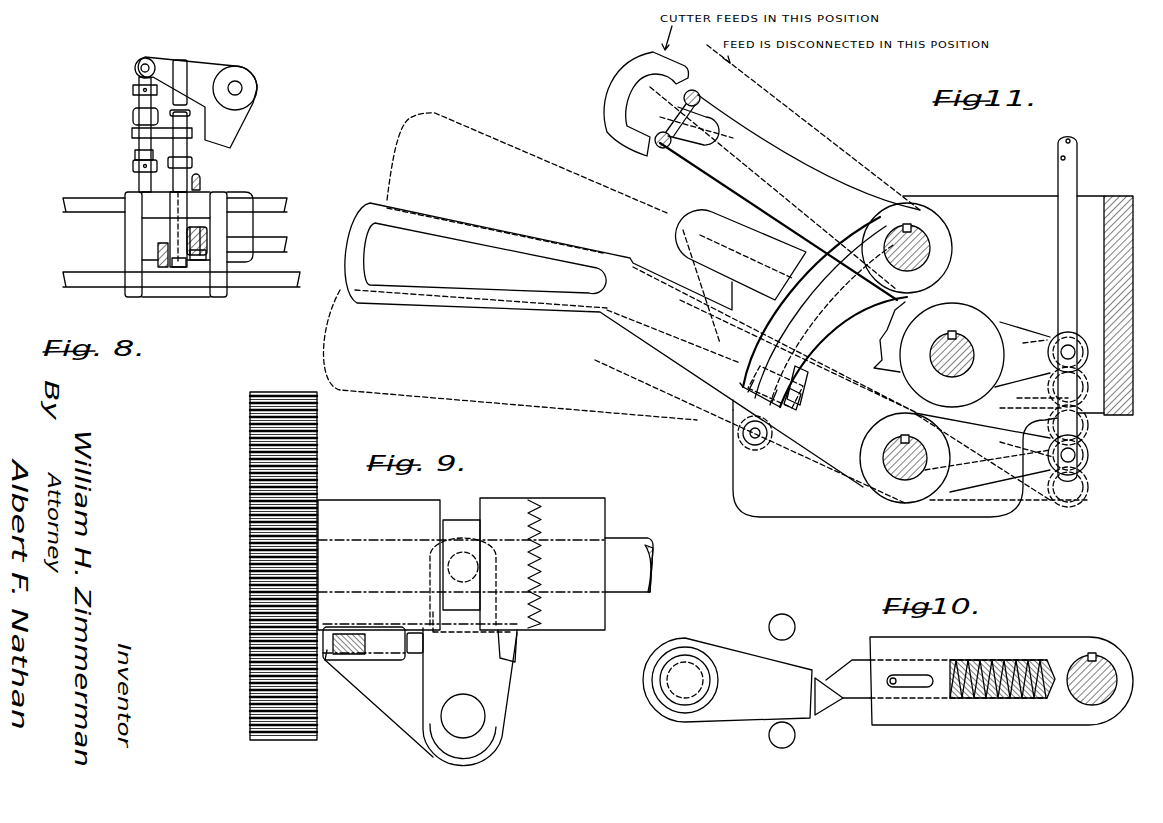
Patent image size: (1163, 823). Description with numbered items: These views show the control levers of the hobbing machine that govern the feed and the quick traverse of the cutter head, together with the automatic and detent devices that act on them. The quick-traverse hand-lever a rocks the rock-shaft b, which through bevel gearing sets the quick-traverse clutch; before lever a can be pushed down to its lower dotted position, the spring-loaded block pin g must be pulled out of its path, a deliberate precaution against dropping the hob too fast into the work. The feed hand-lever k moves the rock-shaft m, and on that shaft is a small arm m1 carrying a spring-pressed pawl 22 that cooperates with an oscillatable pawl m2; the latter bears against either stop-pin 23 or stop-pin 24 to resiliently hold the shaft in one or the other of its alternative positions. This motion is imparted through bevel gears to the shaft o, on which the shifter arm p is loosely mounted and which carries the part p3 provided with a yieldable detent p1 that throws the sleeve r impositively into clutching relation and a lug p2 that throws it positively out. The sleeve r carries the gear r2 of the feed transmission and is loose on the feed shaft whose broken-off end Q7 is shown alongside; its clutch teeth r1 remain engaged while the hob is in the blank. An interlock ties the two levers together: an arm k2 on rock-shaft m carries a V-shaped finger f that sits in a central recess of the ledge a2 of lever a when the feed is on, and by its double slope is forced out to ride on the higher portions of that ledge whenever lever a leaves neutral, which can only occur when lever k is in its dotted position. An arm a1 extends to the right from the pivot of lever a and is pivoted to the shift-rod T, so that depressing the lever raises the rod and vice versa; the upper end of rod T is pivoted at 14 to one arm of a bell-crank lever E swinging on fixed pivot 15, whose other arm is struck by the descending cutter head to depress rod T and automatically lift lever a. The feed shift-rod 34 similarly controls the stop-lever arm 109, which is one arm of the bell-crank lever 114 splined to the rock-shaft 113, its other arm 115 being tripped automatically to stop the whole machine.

In FIG. 8, the upper-end pivot of shift-rod 14 is at (135, 69).
In FIG. 8, the fixed pivot of bell-crank lever 15 is at (242, 89).
In FIG. 8, the bell-crank lever E is at (210, 91).
In FIG. 8, the shift-rod T is at (139, 181).
In FIG. 11, the shift-rod T is at (1057, 145).
In FIG. 8, the feed shift-rod 34 is at (186, 173).
In FIG. 11, the feed shift-rod 34 is at (1062, 178).
In FIG. 8, the feed hand-lever k is at (202, 183).
In FIG. 11, the feed hand-lever k is at (611, 103).
In FIG. 8, the rock-shaft m is at (270, 196).
In FIG. 10, the rock-shaft m is at (1087, 700).
In FIG. 11, the rock-shaft m is at (930, 262).
In FIG. 8, the hand-lever arm of bell-crank lever 109 is at (207, 240).
In FIG. 11, the hand-lever arm of bell-crank lever 109 is at (707, 210).
In FIG. 8, the rock-shaft 113 is at (272, 252).
In FIG. 11, the rock-shaft 113 is at (973, 338).
In FIG. 8, the bell-crank lever 114 is at (198, 261).
In FIG. 11, the bell-crank lever 114 is at (969, 316).
In FIG. 11, the automatically operated arm of bell-crank lever 115 is at (1049, 419).
In FIG. 8, the rock-shaft b is at (283, 287).
In FIG. 11, the rock-shaft b is at (889, 475).
In FIG. 8, the hand-lever a is at (163, 268).
In FIG. 11, the hand-lever a is at (385, 183).
In FIG. 11, the arm of hand-lever a1 is at (1001, 411).
In FIG. 8, the ledge of hand-lever a2 is at (178, 270).
In FIG. 11, the ledge of hand-lever a2 is at (822, 367).
In FIG. 11, the V-shaped finger f is at (800, 376).
In FIG. 11, the block pin g is at (757, 446).
In FIG. 11, the arm of rock-shaft k2 is at (823, 312).
In FIG. 9, the gear r2 is at (250, 523).
In FIG. 9, the sleeve r is at (352, 500).
In FIG. 9, the clutch teeth r1 is at (533, 498).
In FIG. 9, the shaft Q7 is at (629, 565).
In FIG. 9, the shifter arm p is at (470, 643).
In FIG. 9, the yieldable detent p1 is at (416, 657).
In FIG. 9, the lug p2 is at (518, 648).
In FIG. 9, the part carried by shaft o p3 is at (386, 700).
In FIG. 9, the shaft o is at (463, 716).
In FIG. 10, the oscillatable pawl m2 is at (727, 680).
In FIG. 10, the small arm m1 is at (1001, 681).
In FIG. 10, the spring-pressed pawl 22 is at (852, 660).
In FIG. 10, the stop-pin 23 is at (795, 627).
In FIG. 10, the stop-pin 24 is at (795, 741).